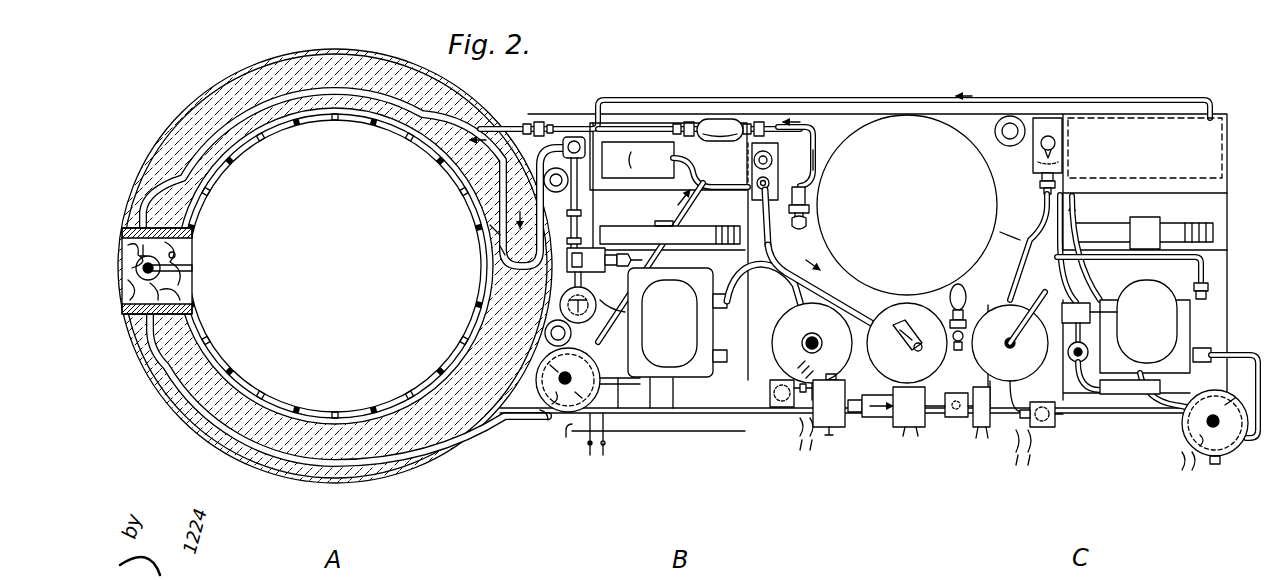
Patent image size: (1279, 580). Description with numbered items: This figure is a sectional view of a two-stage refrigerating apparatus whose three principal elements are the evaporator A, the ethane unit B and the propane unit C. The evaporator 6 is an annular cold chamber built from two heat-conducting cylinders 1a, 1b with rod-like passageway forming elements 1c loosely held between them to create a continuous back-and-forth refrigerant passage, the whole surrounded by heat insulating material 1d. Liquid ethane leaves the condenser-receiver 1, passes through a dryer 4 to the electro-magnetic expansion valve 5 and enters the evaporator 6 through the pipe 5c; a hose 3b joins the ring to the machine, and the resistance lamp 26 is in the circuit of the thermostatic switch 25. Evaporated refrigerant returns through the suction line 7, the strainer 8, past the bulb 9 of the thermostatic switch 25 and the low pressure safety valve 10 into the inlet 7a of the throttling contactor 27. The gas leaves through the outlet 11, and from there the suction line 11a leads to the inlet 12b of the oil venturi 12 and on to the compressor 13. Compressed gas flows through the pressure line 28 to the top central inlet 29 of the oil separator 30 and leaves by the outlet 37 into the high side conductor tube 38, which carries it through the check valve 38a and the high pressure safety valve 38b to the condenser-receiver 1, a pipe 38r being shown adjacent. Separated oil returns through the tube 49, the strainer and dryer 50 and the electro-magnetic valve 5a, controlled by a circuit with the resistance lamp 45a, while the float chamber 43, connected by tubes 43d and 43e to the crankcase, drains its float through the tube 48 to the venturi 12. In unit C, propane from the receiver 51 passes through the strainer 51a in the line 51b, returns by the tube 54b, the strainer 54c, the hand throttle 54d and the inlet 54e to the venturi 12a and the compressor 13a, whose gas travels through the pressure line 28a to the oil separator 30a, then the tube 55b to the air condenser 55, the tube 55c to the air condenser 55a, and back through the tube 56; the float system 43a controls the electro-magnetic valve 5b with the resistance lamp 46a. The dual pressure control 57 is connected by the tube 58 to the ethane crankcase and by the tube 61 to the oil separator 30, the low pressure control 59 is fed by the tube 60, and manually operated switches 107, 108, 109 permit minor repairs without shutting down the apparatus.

The condenser-receiver 1 is at (890, 130).
The cylinder 1a is at (236, 372).
The cylinder 1b is at (226, 386).
The passageway forming elements 1c is at (374, 411).
The heat insulating material 1d is at (280, 440).
The hose 3b is at (795, 175).
The dryer 4 is at (716, 122).
The electro-magnetic expansion valve 5 is at (136, 264).
The electro-magnetic valve 5a is at (796, 412).
The electro-magnetic valve 5b is at (1042, 430).
The pipe 5c is at (176, 253).
The evaporator 6 is at (196, 84).
The suction line 7 is at (502, 250).
The inlet 7a is at (593, 302).
The strainer 8 is at (571, 135).
The bulb 9 is at (590, 228).
The low pressure safety valve 10 is at (600, 276).
The outlet 11 is at (606, 311).
The suction line 11a is at (604, 386).
The oil venturi 12 is at (652, 388).
The venturi 12a is at (1130, 378).
The inlet 12b is at (626, 380).
The compressor 13 is at (676, 382).
The compressor 13a is at (1172, 314).
The thermostatic switch 25 is at (637, 150).
The resistance lamp 26 is at (543, 180).
The throttling contactor 27 is at (582, 316).
The pressure line 28 is at (790, 283).
The pressure line 28a is at (1202, 262).
The top central inlet 29 is at (850, 345).
The oil separator 30 is at (822, 335).
The oil separator 30a is at (1010, 308).
The outlet 37 is at (840, 384).
The high side conductor tube 38 is at (1005, 266).
The check valve 38a is at (878, 420).
The high pressure safety valve 38b is at (960, 418).
The pipe 38r is at (1006, 396).
The float chamber 43 is at (560, 394).
The float system 43a is at (1230, 456).
The tube 43d is at (560, 418).
The tube 43e is at (586, 432).
The resistance lamp 45a is at (549, 330).
The resistance lamp 46a is at (1011, 128).
The tube 48 is at (616, 420).
The tube 49 is at (812, 368).
The strainer and dryer 50 is at (776, 408).
The receiver 51 is at (907, 285).
The strainer 51a is at (958, 312).
The line 51b is at (940, 336).
The tube 54b is at (1002, 234).
The strainer 54c is at (1092, 306).
The hand throttle 54d is at (1088, 352).
The inlet 54e is at (1122, 394).
The air condenser 55 is at (1178, 172).
The air condenser 55a is at (703, 183).
The tube 55b is at (1085, 214).
The tube 55c is at (1142, 97).
The tube 56 is at (818, 266).
The dual pressure control 57 is at (770, 150).
The tube 58 is at (690, 216).
The low pressure control 59 is at (1050, 122).
The tube 60 is at (1040, 228).
The tube 61 is at (772, 249).
The manually operated switch 107 is at (822, 428).
The manually operated switch 108 is at (913, 428).
The manually operated switch 109 is at (986, 440).